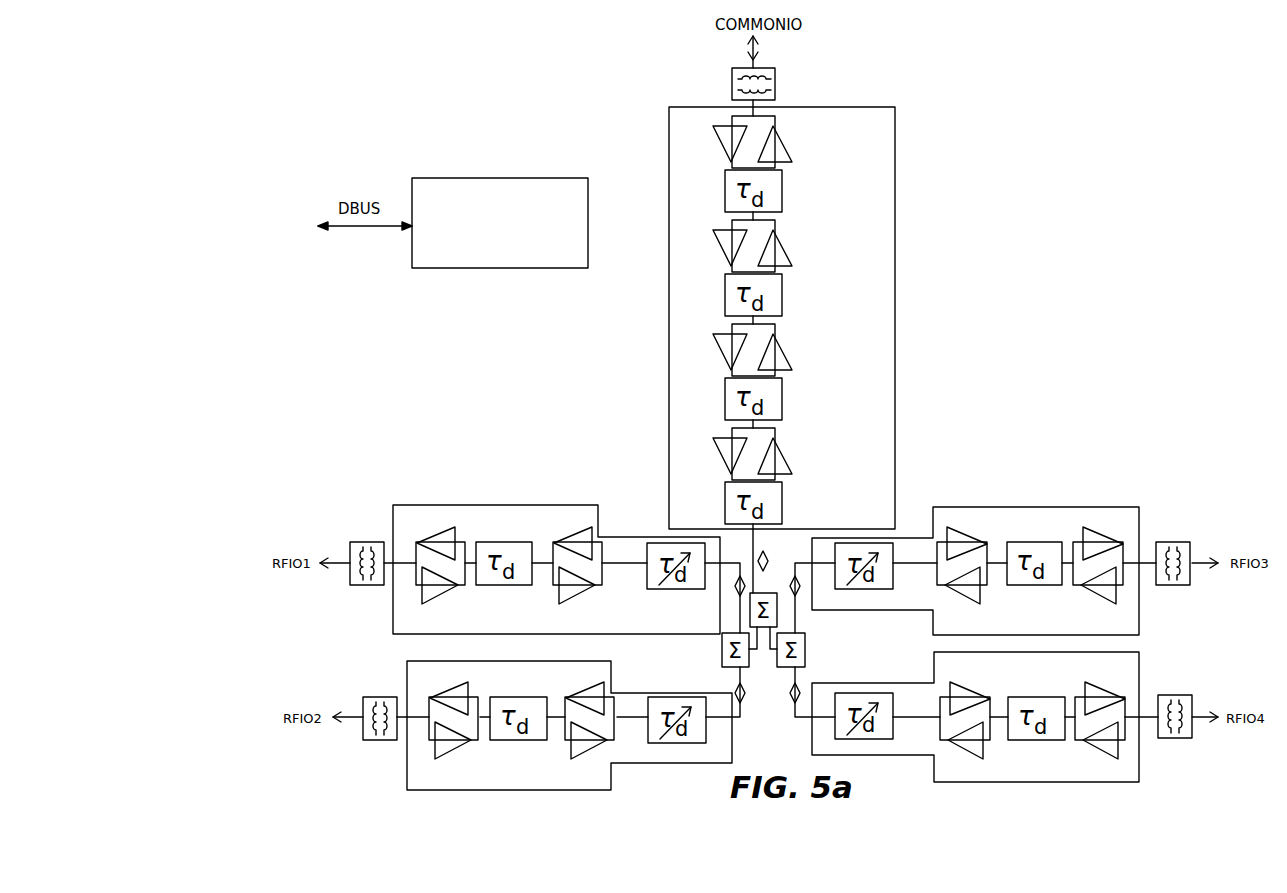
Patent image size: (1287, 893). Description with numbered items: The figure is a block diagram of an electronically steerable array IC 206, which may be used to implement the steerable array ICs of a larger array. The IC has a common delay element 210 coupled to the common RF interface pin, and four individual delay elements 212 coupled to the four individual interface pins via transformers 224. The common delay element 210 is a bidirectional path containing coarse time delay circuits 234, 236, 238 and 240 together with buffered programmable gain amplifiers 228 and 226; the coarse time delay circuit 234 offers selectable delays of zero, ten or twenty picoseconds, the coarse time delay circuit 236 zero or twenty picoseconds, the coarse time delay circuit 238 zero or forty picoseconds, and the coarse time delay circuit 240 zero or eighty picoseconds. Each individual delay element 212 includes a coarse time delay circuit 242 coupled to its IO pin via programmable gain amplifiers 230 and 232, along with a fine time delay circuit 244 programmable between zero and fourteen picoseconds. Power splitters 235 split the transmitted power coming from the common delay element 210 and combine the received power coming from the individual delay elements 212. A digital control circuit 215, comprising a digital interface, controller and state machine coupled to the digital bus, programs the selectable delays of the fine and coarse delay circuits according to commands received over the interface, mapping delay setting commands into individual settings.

The electronically steerable array IC 206 is at (311, 48).
The digital control circuit 215 is at (588, 186).
The common delay element 210 is at (896, 233).
The individual delay element 212 is at (543, 505).
The transformer 224 is at (775, 77).
The programmable gain amplifier 226 is at (791, 148).
The programmable gain amplifier 228 is at (728, 150).
The programmable gain amplifier 230 is at (447, 531).
The programmable gain amplifier 232 is at (445, 601).
The coarse time delay circuit 234 is at (788, 180).
The power splitter 235 is at (765, 592).
The coarse time delay circuit 236 is at (788, 284).
The coarse time delay circuit 238 is at (791, 356).
The coarse time delay circuit 240 is at (791, 460).
The coarse time delay circuit 242 is at (505, 542).
The fine time delay circuit 244 is at (660, 592).